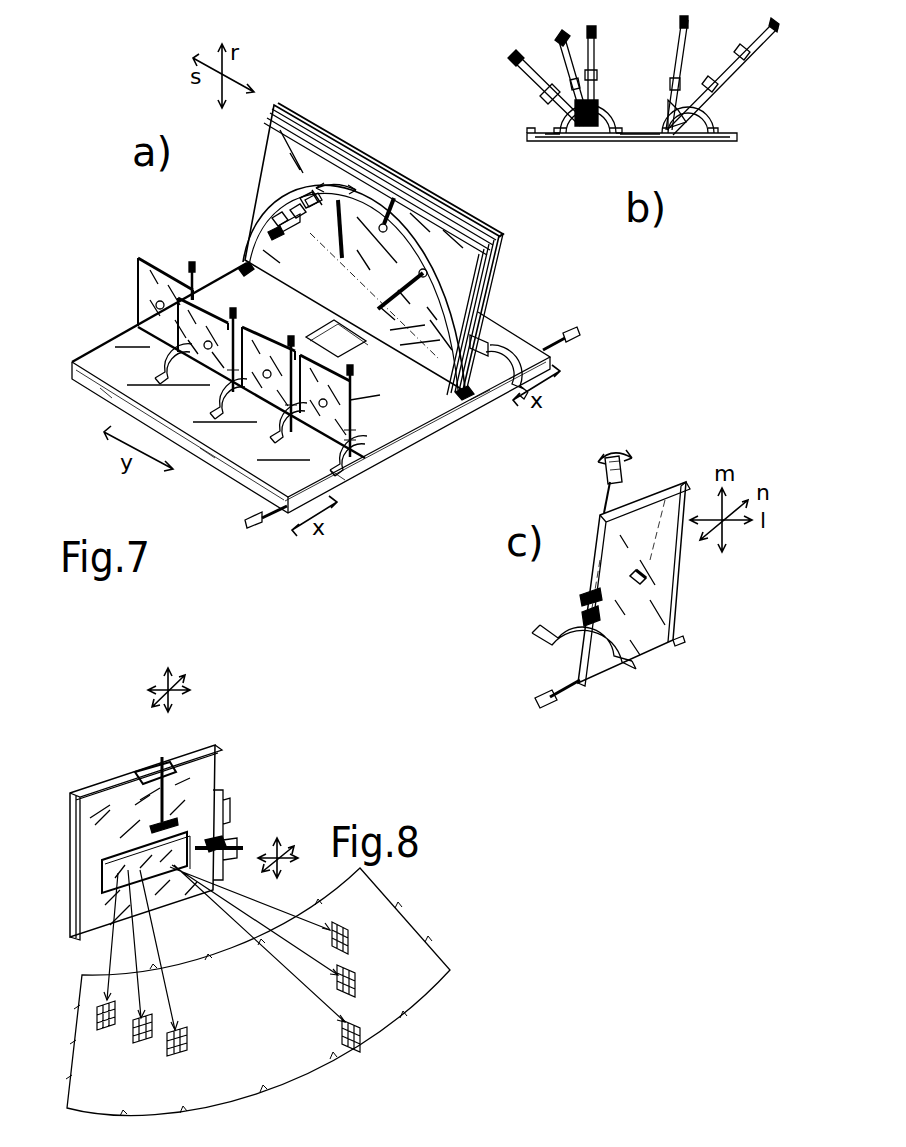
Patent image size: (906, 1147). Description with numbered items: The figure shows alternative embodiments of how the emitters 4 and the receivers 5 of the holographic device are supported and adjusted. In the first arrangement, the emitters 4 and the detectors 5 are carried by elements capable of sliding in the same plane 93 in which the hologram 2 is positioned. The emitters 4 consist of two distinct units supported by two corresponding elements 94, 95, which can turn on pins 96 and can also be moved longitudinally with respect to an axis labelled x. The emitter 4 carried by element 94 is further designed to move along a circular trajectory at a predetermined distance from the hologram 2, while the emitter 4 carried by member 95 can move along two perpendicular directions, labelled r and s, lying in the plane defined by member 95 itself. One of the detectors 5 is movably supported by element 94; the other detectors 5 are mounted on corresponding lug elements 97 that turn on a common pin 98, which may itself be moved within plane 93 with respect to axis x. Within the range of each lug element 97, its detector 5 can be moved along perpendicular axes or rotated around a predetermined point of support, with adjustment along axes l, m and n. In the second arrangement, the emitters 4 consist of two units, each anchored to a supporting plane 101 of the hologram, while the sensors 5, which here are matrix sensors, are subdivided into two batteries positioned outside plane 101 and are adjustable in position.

In FIG. 7, the hologram 2 is at (306, 330).
In FIG. 8, the hologram 2 is at (100, 870).
In FIG. 7, the emitters 4 is at (296, 204).
In FIG. 8, the emitters 4 is at (168, 815).
In FIG. 7, the receivers 5 is at (156, 303).
In FIG. 8, the receivers 5 is at (175, 1055).
In FIG. 7, the plane 93 is at (94, 365).
In FIG. 7, the element 94 is at (315, 146).
In FIG. 7, the element 95 is at (353, 146).
In FIG. 7, the pins 96 is at (242, 260).
In FIG. 7, the lug elements 97 is at (140, 258).
In FIG. 7, the common pin 98 is at (136, 326).
In FIG. 8, the supporting plane 101 is at (108, 792).